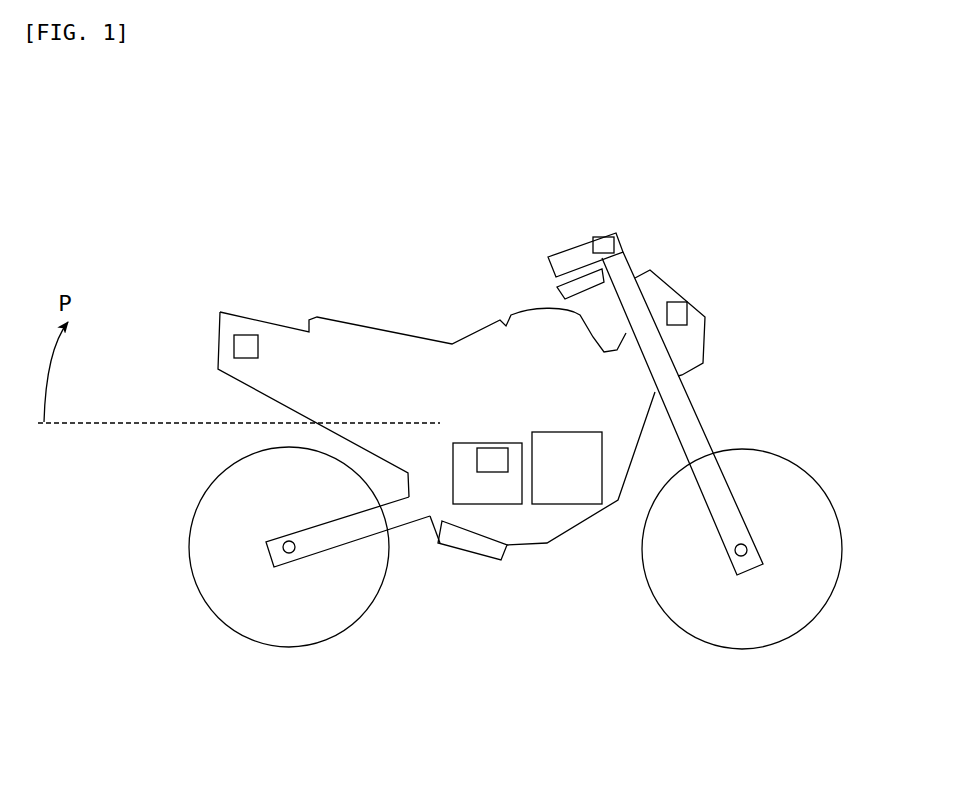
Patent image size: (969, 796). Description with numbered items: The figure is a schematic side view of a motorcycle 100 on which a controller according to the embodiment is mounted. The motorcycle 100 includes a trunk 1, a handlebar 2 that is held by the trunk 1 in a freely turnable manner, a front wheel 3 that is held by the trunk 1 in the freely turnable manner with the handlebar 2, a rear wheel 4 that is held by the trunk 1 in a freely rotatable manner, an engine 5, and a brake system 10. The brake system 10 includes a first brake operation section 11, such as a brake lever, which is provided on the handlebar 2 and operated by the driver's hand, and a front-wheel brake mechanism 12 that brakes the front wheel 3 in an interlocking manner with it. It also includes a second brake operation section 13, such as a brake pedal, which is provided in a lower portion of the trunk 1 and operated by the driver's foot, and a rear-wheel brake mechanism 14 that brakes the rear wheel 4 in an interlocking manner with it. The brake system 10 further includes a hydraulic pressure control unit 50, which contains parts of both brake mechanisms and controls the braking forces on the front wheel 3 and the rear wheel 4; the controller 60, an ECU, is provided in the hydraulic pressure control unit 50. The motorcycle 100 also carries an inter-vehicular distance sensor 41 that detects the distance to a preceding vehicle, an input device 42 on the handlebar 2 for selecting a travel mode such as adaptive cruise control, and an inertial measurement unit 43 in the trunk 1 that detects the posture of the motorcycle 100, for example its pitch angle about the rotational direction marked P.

The motorcycle 100 is at (788, 113).
The trunk 1 is at (375, 343).
The handlebar 2 is at (560, 262).
The front wheel 3 is at (743, 660).
The rear wheel 4 is at (290, 660).
The engine 5 is at (565, 505).
The brake system 10 is at (733, 380).
The first brake operation section 11 is at (556, 291).
The front-wheel brake mechanism 12 is at (757, 523).
The second brake operation section 13 is at (487, 547).
The rear-wheel brake mechanism 14 is at (272, 532).
The inter-vehicular distance sensor 41 is at (677, 304).
The input device 42 is at (604, 242).
The inertial measurement unit 43 is at (245, 340).
The hydraulic pressure control unit 50 is at (472, 442).
The controller 60 is at (493, 476).